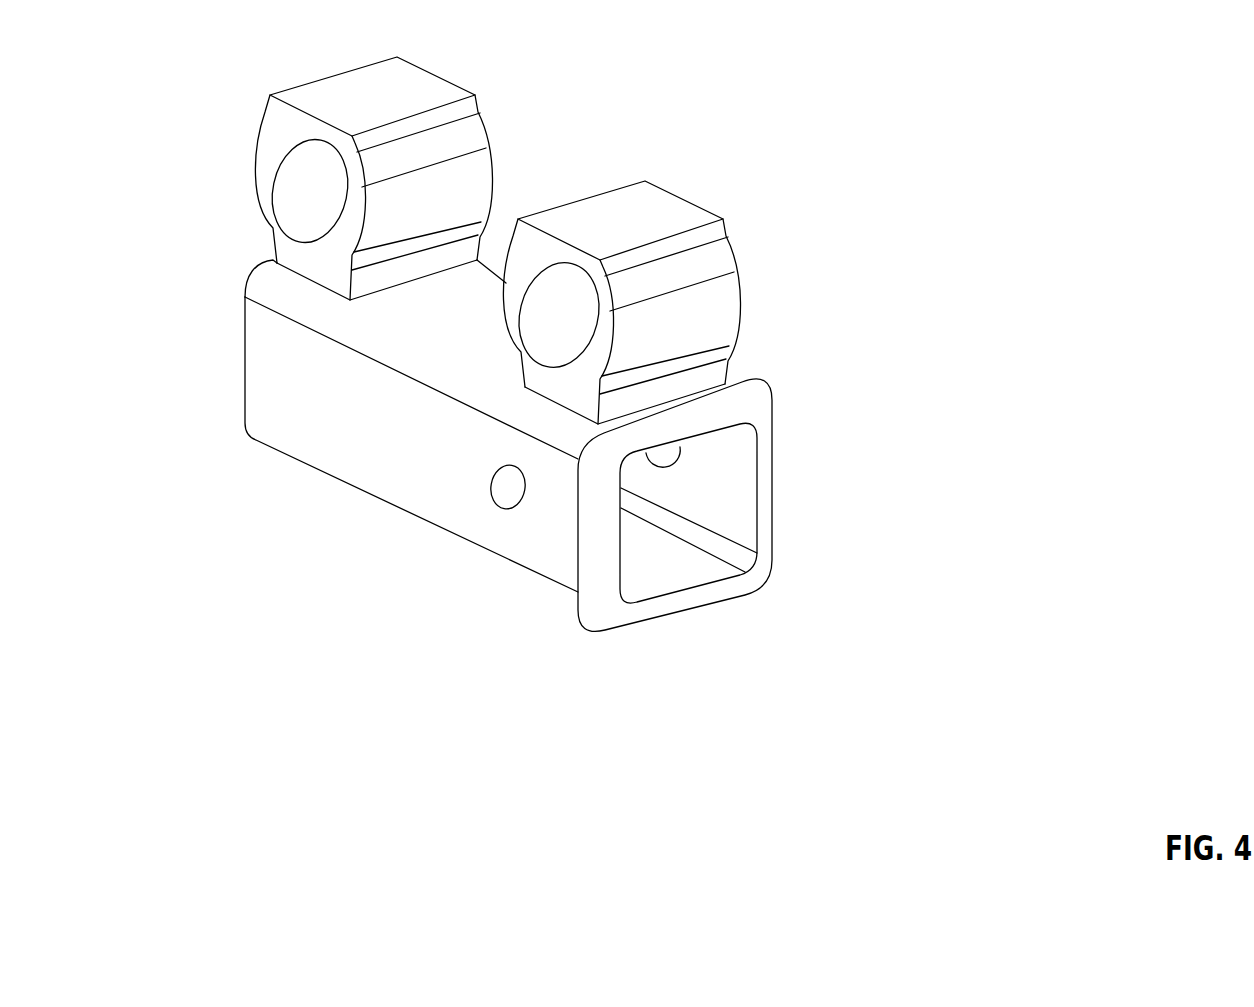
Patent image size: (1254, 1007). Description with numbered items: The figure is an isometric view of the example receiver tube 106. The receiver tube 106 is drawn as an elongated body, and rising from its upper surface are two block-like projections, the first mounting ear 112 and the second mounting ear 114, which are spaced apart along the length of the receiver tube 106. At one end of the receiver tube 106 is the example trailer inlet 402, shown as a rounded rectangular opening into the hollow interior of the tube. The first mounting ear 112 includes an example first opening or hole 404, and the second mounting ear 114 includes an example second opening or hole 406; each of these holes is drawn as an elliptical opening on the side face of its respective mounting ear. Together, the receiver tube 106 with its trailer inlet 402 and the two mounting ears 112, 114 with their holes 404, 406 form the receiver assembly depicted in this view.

The receiver tube 106 is at (497, 552).
The first mounting ear 112 is at (680, 195).
The second mounting ear 114 is at (433, 75).
The trailer inlet 402 is at (757, 463).
The first opening or hole 404 is at (520, 323).
The second opening or hole 406 is at (272, 152).